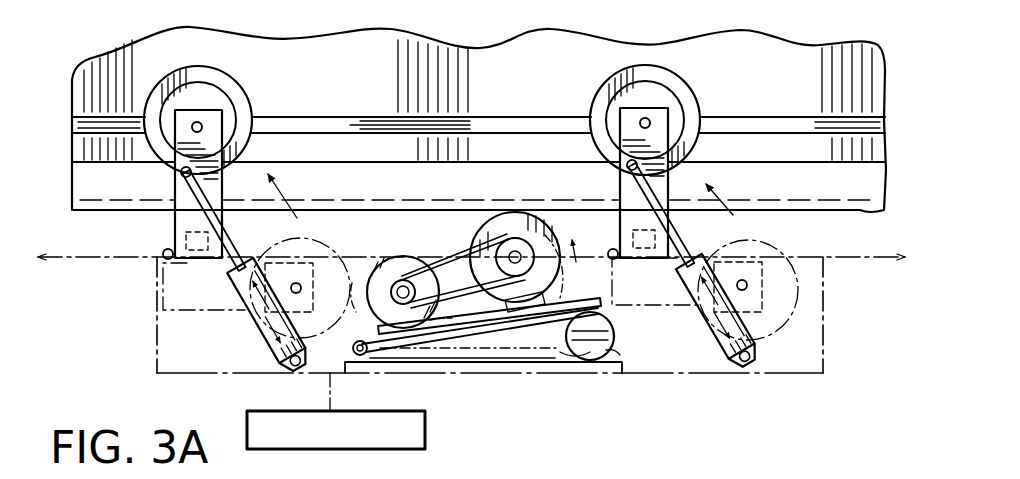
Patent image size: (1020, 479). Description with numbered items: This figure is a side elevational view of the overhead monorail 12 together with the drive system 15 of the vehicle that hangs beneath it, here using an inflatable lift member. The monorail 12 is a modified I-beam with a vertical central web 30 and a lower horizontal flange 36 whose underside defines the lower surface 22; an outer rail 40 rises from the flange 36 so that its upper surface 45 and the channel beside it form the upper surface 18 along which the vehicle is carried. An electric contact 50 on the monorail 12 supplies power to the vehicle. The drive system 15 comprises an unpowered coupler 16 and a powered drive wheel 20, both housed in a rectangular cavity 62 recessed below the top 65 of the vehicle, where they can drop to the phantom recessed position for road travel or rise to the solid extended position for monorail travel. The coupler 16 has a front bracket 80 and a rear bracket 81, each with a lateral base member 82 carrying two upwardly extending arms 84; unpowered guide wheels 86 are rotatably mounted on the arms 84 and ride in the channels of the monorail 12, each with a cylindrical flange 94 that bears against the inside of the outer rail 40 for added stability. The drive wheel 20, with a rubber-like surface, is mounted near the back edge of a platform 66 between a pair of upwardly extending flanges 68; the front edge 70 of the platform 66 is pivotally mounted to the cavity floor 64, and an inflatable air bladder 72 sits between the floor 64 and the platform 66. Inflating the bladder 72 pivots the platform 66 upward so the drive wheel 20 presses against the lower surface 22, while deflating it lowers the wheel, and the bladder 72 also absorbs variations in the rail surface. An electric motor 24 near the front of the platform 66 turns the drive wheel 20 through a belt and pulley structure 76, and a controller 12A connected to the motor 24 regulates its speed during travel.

The monorail 12 is at (818, 36).
The controller 12A is at (428, 432).
The drive system 15 is at (132, 377).
The coupler 16 is at (140, 62).
The upper surface 18 is at (527, 188).
The drive wheel 20 is at (476, 228).
The lower surface 22 is at (110, 213).
The electric motor 24 is at (392, 272).
The central web 30 is at (349, 24).
The lower horizontal flange 36 is at (798, 214).
The outer rail 40 is at (140, 184).
The upper surface of outer rail 45 is at (322, 160).
The electric contact 50 is at (278, 114).
The rectangular cavity 62 is at (236, 378).
The cavity floor 64 is at (690, 356).
The top of vehicle 65 is at (150, 256).
The platform 66 is at (491, 338).
The upwardly extending flanges 68 is at (496, 312).
The front edge of platform 70 is at (374, 374).
The inflatable air bladder 72 is at (616, 324).
The belt and pulley structure 76 is at (432, 270).
The front bracket 80 is at (232, 176).
The rear bracket 81 is at (672, 179).
The lateral base member 82 is at (186, 264).
The arms 84 is at (210, 108).
The guide wheels 86 is at (208, 62).
The cylindrical flange 94 is at (148, 108).